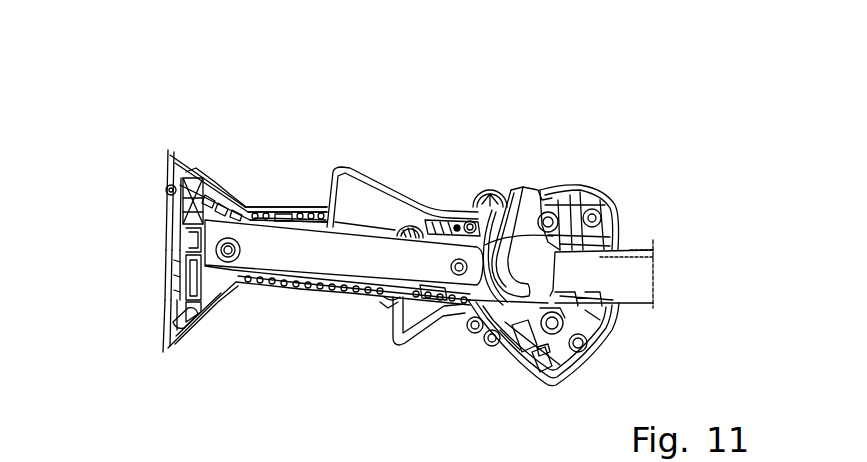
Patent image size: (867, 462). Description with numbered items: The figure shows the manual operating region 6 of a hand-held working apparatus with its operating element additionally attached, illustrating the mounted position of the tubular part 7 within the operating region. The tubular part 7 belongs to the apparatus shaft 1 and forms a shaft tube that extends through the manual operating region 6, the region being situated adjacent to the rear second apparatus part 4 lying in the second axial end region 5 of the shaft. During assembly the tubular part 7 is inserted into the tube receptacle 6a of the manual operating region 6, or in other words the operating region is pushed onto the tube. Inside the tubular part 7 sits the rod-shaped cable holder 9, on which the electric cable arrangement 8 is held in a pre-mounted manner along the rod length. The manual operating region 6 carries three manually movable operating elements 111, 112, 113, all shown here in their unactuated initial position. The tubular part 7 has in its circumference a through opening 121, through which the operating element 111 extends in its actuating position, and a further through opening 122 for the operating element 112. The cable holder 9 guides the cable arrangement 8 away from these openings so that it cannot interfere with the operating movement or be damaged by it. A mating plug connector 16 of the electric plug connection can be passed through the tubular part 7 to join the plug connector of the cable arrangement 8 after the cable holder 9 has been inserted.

The apparatus shaft 1 is at (283, 210).
The second apparatus part 4 is at (182, 322).
The second axial end region 5 is at (228, 288).
The manual operating region 6 is at (366, 300).
The tube receptacle 6a is at (627, 248).
The tubular part 7 is at (320, 264).
The electric cable arrangement 8 is at (196, 185).
The cable holder 9 is at (192, 248).
The mating plug connector 16 is at (592, 305).
The operating element 111 is at (410, 322).
The further operating element 112 is at (367, 180).
The further operating element 113 is at (516, 185).
The through opening 121 is at (397, 303).
The further through opening 122 is at (404, 228).